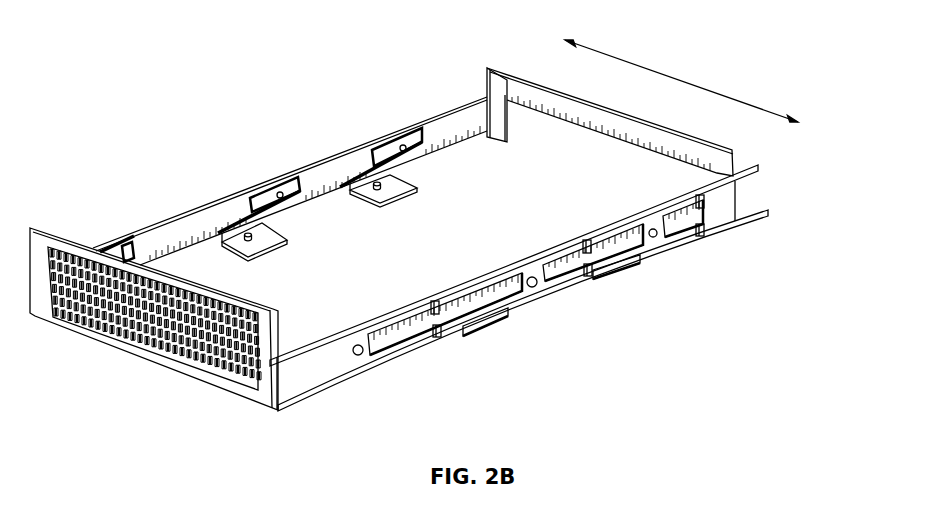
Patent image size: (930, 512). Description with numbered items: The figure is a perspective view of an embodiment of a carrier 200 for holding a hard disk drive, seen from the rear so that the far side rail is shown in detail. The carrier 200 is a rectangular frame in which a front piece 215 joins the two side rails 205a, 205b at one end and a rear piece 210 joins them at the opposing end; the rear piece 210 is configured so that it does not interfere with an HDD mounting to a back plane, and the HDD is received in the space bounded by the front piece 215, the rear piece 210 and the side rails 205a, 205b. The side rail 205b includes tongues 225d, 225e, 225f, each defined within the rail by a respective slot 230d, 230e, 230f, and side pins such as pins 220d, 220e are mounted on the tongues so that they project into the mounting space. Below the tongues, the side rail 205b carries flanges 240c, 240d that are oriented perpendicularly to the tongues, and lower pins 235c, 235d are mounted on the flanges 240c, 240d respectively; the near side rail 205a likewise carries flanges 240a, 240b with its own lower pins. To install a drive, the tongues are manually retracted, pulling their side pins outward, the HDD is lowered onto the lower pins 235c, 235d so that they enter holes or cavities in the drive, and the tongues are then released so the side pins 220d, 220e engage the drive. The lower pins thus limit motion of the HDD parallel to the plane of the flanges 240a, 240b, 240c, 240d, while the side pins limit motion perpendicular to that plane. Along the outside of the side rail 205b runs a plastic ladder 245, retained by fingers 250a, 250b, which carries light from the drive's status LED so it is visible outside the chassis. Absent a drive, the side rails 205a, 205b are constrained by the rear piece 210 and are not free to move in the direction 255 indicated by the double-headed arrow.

The carrier 200 is at (160, 47).
The side rail 205a is at (310, 375).
The side rail 205b is at (470, 112).
The rear piece 210 is at (543, 90).
The front piece 215 is at (147, 355).
The pin 220d is at (402, 145).
The pin 220e is at (279, 192).
The tongue 225d is at (373, 158).
The tongue 225e is at (245, 197).
The tongue 225f is at (120, 247).
The slot 230d is at (433, 128).
The slot 230e is at (313, 180).
The slot 230f is at (138, 246).
The pin 235c is at (394, 197).
The pin 235d is at (264, 243).
The flange 240a is at (612, 280).
The flange 240b is at (480, 332).
The flange 240c is at (356, 196).
The flange 240d is at (255, 257).
The plastic ladder 245 is at (767, 215).
The finger 250a is at (704, 208).
The finger 250b is at (700, 237).
The direction 255 is at (637, 63).